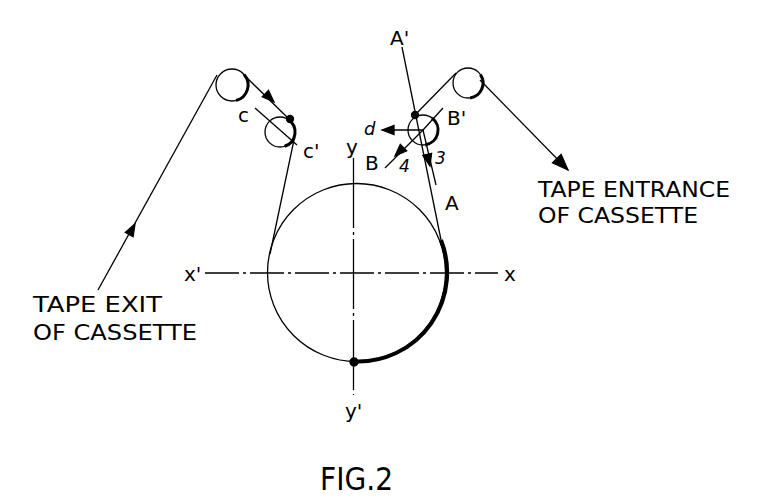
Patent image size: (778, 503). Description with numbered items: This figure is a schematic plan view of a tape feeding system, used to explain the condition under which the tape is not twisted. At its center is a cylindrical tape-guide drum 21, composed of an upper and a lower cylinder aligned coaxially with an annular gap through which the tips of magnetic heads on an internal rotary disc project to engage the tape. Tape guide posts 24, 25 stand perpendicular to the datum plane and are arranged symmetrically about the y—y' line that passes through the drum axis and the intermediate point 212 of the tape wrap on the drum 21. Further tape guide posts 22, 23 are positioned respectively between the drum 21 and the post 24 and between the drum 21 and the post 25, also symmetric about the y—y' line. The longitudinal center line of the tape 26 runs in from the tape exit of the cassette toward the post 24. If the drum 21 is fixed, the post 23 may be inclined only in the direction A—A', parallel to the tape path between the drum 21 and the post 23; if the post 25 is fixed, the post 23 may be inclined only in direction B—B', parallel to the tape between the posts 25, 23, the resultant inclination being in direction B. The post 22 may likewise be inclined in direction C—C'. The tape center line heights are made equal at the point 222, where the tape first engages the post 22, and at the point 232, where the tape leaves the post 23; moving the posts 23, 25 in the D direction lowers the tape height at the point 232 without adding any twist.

The cylindrical tape-guide drum 21 is at (302, 315).
The intermediate point 212 is at (350, 367).
The tape guide post 22 is at (277, 143).
The point where the tape initially engages the post 222 is at (291, 114).
The tape guide post 23 is at (440, 132).
The point where tape leaves the post 232 is at (413, 112).
The tape guide post 24 is at (235, 73).
The tape guide post 25 is at (476, 84).
The longitudinal center line of the tape 26 is at (162, 175).